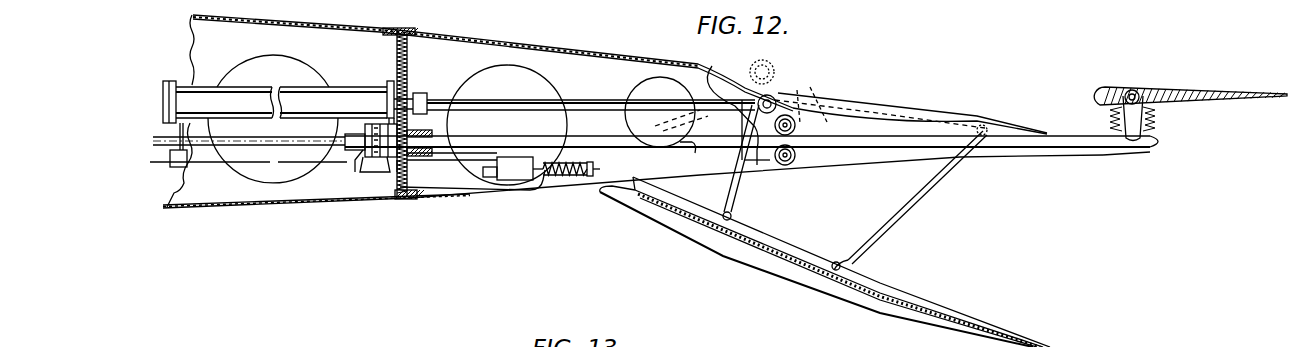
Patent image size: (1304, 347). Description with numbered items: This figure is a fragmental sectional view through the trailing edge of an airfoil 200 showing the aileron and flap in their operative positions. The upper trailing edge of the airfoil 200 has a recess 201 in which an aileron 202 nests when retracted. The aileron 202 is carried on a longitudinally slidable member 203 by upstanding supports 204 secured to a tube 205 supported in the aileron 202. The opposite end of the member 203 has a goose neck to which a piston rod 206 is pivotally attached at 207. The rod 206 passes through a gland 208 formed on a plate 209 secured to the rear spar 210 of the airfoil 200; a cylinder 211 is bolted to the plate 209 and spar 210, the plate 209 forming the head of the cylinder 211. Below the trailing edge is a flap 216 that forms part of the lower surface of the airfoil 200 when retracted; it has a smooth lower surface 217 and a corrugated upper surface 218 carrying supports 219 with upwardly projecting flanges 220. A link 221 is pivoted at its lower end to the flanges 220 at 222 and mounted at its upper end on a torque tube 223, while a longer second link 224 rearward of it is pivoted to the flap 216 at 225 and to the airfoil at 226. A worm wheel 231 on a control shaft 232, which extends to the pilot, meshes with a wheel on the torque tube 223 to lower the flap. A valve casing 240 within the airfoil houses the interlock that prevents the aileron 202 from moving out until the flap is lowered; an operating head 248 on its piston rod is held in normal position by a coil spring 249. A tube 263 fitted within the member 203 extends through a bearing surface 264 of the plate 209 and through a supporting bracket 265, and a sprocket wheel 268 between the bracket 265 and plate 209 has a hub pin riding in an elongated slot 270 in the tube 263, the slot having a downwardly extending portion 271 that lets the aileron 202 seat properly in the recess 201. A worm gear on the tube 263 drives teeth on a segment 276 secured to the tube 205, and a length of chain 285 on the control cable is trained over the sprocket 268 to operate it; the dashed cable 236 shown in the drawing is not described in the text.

In FIG. 12, the airfoil 200 is at (547, 44).
In FIG. 12, the recess 201 is at (893, 104).
In FIG. 12, the aileron 202 is at (1212, 88).
In FIG. 12, the longitudinally slidable member 203 is at (1137, 162).
In FIG. 12, the upstanding supports 204 is at (1132, 120).
In FIG. 12, the tube 205 is at (1134, 92).
In FIG. 12, the piston rod 206 is at (584, 100).
In FIG. 12, the pivot 207 is at (731, 70).
In FIG. 12, the gland 208 is at (421, 94).
In FIG. 12, the plate 209 is at (396, 72).
In FIG. 12, the rear spar 210 is at (398, 51).
In FIG. 13, the rear spar 210 is at (419, 337).
In FIG. 12, the cylinder 211 is at (293, 90).
In FIG. 12, the flap 216 is at (866, 319).
In FIG. 12, the smooth lower surface 217 is at (803, 278).
In FIG. 12, the corrugated upper surface 218 is at (917, 300).
In FIG. 12, the supports 219 is at (975, 328).
In FIG. 12, the upwardly projecting flanges 220 is at (888, 285).
In FIG. 12, the link 221 is at (738, 196).
In FIG. 12, the pivot 222 is at (730, 218).
In FIG. 12, the torque tube 223 is at (792, 93).
In FIG. 12, the second link 224 is at (903, 212).
In FIG. 12, the pivot 225 is at (836, 261).
In FIG. 12, the pivot 226 is at (990, 127).
In FIG. 12, the worm wheel 231 is at (772, 66).
In FIG. 12, the control shaft 232 is at (666, 120).
In FIG. 12, the cable 236 is at (846, 85).
In FIG. 12, the valve casing 240 is at (515, 173).
In FIG. 12, the operating head 248 is at (585, 177).
In FIG. 12, the coil spring 249 is at (556, 173).
In FIG. 12, the tube 263 is at (480, 138).
In FIG. 12, the bearing surface 264 is at (427, 153).
In FIG. 12, the supporting bracket 265 is at (362, 168).
In FIG. 12, the sprocket wheel 268 is at (380, 160).
In FIG. 12, the elongated slot 270 is at (522, 140).
In FIG. 12, the downwardly extending portion 271 is at (694, 143).
In FIG. 12, the segment 276 is at (1113, 114).
In FIG. 12, the length of chain 285 is at (373, 163).